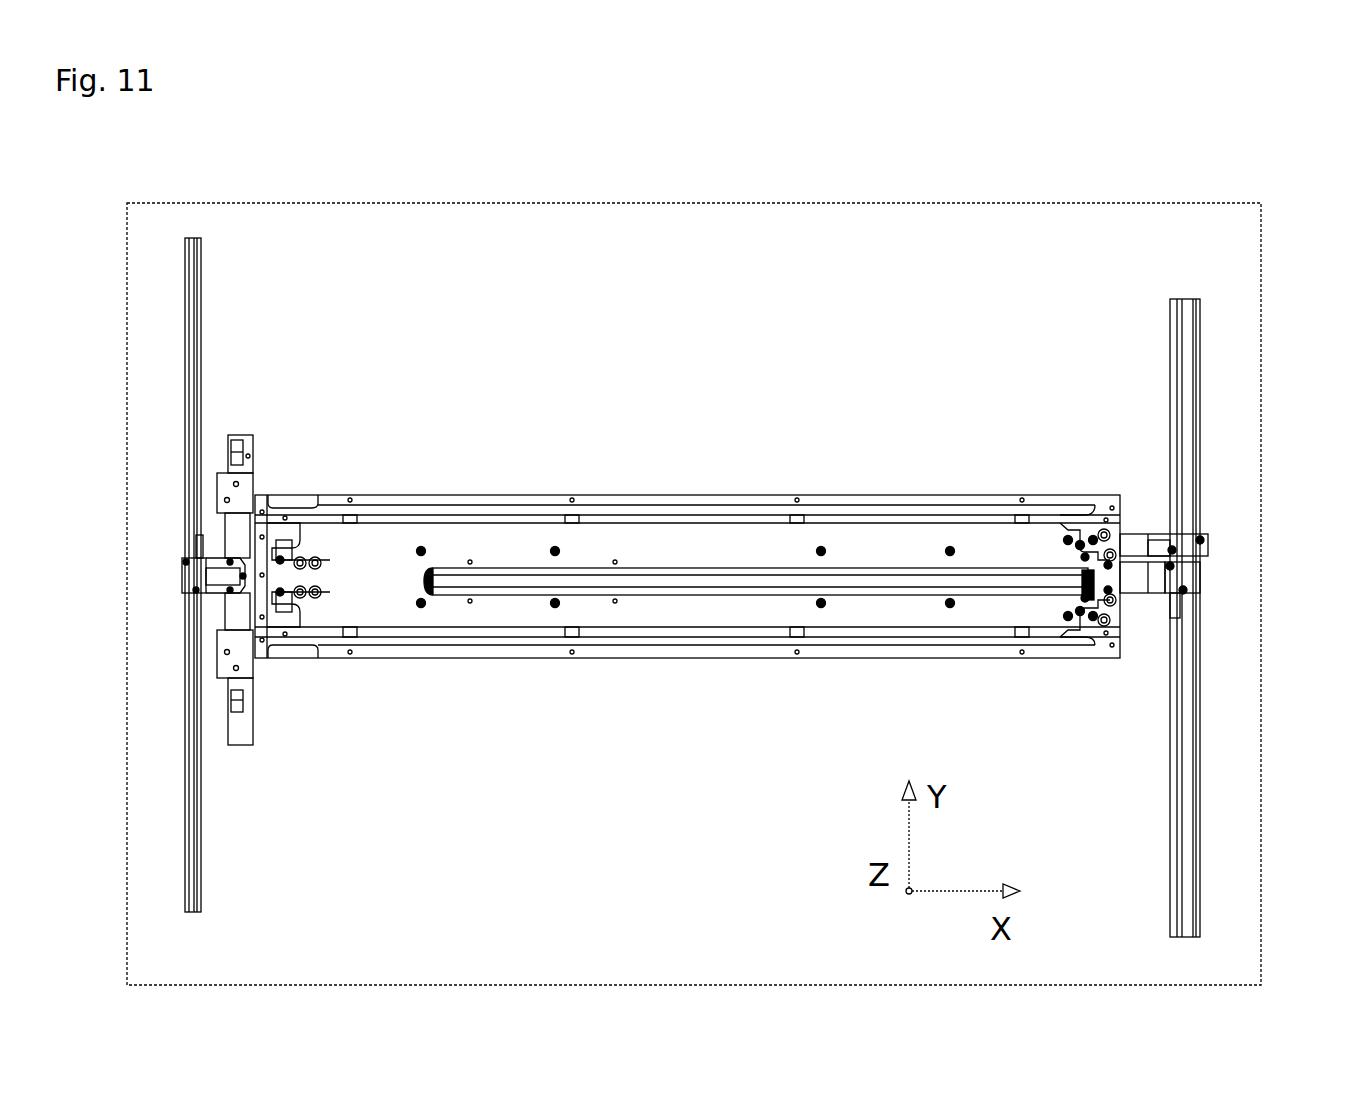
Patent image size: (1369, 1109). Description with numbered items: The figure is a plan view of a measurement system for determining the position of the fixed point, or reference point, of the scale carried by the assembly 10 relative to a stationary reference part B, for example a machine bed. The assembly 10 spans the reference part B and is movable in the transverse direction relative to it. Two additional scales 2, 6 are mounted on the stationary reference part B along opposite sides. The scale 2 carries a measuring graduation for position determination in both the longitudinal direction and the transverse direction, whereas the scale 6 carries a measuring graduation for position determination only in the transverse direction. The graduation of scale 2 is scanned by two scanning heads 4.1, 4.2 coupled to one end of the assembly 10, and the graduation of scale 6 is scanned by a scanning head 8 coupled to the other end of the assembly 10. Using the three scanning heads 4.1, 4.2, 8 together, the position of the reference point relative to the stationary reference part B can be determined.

The stationary reference part B is at (462, 204).
The scale 2 is at (1196, 322).
The scanning head 4.1 is at (1180, 583).
The scanning head 4.2 is at (1190, 541).
The scale 6 is at (186, 284).
The scanning head 8 is at (196, 578).
The assembly 10 is at (371, 422).